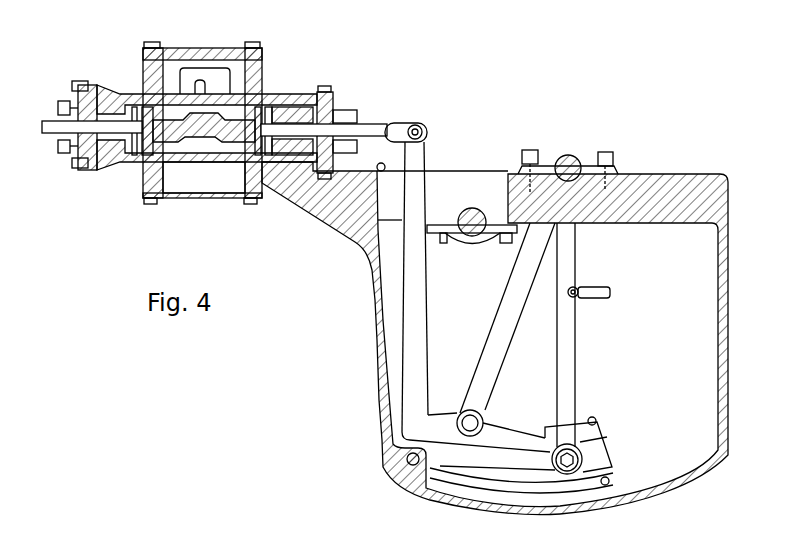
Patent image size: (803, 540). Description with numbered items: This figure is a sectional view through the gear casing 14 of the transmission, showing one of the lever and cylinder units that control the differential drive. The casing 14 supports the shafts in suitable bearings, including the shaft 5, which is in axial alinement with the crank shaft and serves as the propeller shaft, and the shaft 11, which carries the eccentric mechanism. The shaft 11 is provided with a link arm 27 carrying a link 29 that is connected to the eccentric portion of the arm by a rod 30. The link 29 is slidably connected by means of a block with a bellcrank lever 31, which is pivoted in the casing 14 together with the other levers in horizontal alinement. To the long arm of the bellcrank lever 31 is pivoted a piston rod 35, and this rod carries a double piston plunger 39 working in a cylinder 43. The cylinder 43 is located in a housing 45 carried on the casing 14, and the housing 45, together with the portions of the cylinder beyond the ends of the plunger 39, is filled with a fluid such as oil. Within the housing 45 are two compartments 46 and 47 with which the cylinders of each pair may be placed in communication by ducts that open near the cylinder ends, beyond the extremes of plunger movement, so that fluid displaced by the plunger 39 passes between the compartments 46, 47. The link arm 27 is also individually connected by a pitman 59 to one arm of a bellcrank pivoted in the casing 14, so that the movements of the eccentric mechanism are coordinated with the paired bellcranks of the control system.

The shaft 5 is at (470, 212).
The shaft 11 is at (567, 151).
The gear casing 14 is at (380, 379).
The link arm 27 is at (570, 348).
The link 29 is at (505, 438).
The rod 30 is at (500, 344).
The bellcrank lever 31 is at (428, 318).
The piston rod 35 is at (366, 128).
The double piston plunger 39 is at (240, 130).
The cylinder 43 is at (105, 112).
The housing 45 is at (182, 42).
The compartment 46 is at (233, 81).
The compartment 47 is at (188, 173).
The pitman 59 is at (603, 287).